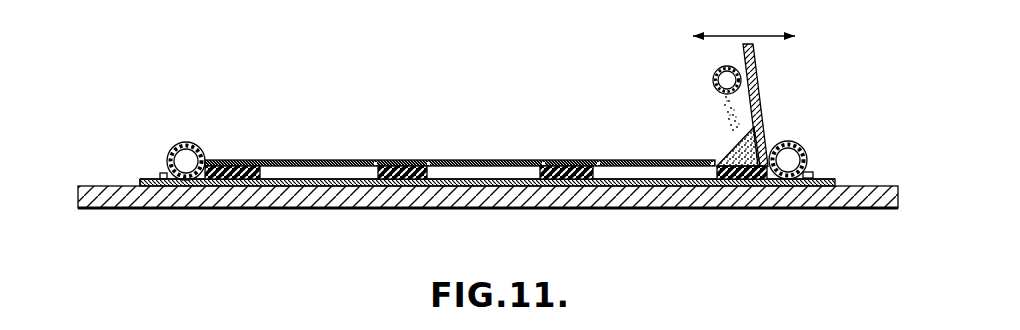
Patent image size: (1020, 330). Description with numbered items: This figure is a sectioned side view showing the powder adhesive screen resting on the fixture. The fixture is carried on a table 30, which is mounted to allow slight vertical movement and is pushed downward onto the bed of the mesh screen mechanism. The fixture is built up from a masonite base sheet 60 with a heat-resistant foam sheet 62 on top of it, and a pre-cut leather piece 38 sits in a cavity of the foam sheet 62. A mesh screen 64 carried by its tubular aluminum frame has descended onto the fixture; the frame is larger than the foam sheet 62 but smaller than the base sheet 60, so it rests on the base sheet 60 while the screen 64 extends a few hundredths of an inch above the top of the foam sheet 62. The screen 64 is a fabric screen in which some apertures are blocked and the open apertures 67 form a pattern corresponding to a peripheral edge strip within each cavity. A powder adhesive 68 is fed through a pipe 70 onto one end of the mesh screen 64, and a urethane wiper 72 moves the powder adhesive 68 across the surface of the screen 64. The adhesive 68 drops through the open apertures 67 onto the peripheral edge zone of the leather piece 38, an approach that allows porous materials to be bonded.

The table 30 is at (297, 195).
The leather piece 38 is at (352, 182).
The masonite base sheet 60 is at (148, 178).
The heat-resistant foam sheet 62 is at (228, 180).
The mesh screen 64 is at (230, 163).
The open apertures 67 is at (428, 162).
The powder adhesive 68 is at (723, 150).
The pipe 70 is at (713, 79).
The urethane wiper 72 is at (762, 72).